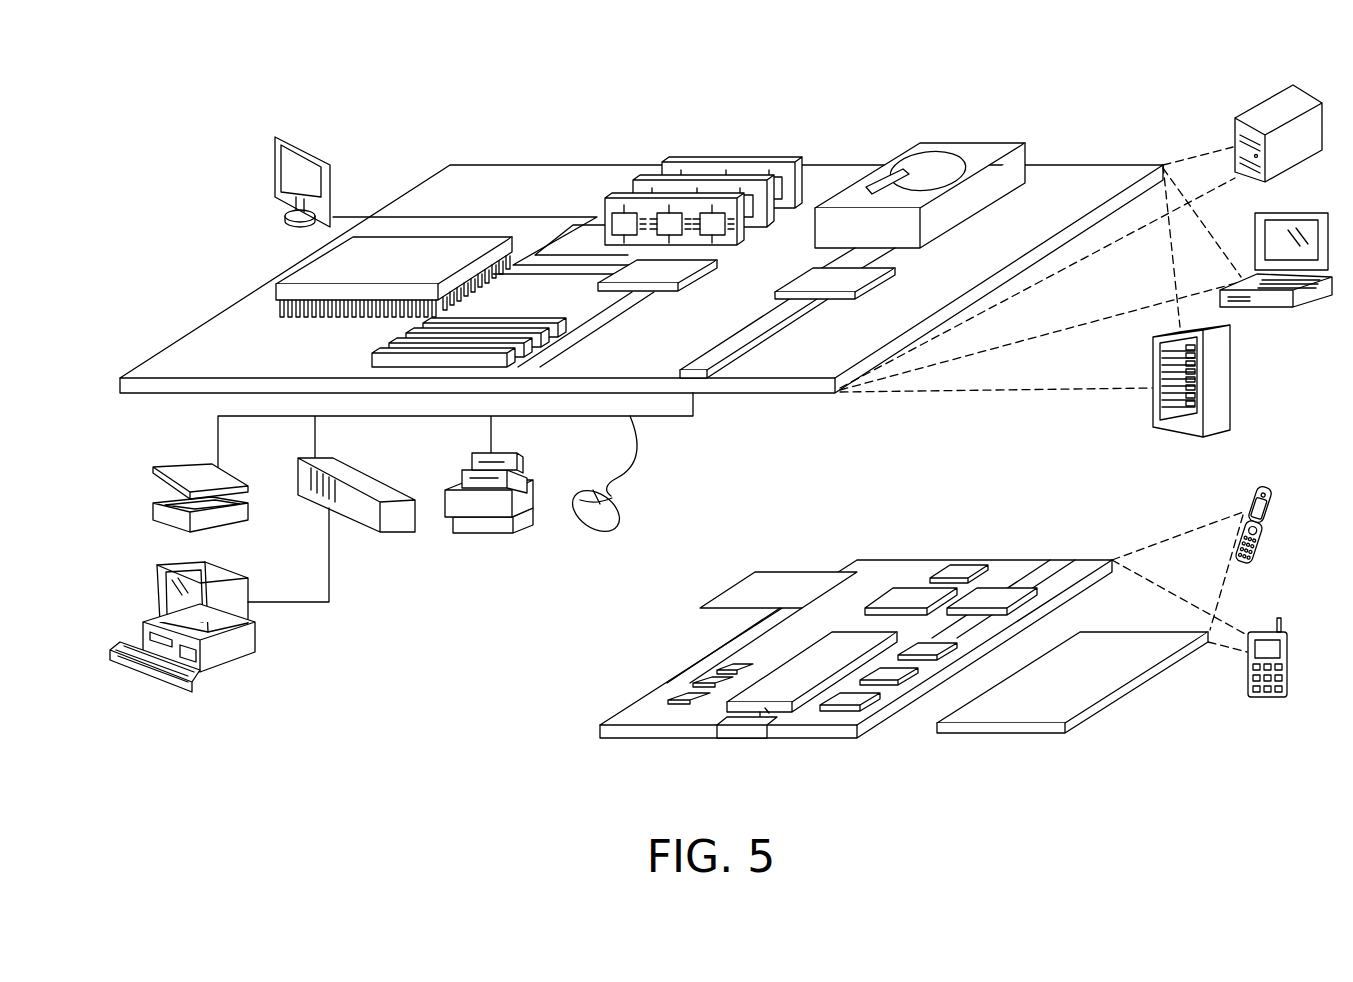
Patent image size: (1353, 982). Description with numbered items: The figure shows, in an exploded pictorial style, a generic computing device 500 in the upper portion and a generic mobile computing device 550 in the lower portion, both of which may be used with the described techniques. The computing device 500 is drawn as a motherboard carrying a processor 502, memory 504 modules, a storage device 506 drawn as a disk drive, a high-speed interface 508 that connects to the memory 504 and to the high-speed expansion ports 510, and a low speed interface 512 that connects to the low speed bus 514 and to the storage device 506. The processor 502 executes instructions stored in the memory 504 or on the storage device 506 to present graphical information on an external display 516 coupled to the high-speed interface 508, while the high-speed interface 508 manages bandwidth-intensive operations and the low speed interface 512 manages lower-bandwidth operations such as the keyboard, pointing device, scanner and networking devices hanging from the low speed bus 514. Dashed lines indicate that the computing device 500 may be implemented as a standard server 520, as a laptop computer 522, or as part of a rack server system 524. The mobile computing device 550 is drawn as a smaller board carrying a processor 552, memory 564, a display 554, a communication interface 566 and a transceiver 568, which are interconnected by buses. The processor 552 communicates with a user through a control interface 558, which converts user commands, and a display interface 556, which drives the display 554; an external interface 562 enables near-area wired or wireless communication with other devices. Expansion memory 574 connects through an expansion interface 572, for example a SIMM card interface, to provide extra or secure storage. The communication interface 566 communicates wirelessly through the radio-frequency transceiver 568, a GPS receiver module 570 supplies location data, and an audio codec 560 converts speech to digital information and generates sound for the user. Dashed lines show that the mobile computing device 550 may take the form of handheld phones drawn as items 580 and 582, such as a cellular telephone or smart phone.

The computing device 500 is at (403, 114).
The processor 502 is at (299, 265).
The memory 504 is at (736, 160).
The storage device 506 is at (958, 142).
The high-speed interface 508 is at (668, 270).
The high-speed expansion ports 510 is at (396, 339).
The low speed interface 512 is at (807, 277).
The low speed bus 514 is at (703, 366).
The display 516 is at (280, 136).
The standard server 520 is at (1255, 112).
The laptop computer 522 is at (1308, 211).
The rack server system 524 is at (1235, 380).
The mobile computing device 550 is at (557, 747).
The processor 552 is at (778, 680).
The display 554 is at (1110, 646).
The display interface 556 is at (857, 701).
The control interface 558 is at (893, 674).
The audio codec 560 is at (933, 644).
The external interface 562 is at (743, 727).
The memory 564 is at (700, 684).
The communication interface 566 is at (910, 591).
The transceiver 568 is at (1000, 592).
The GPS receiver module 570 is at (960, 568).
The expansion interface 572 is at (838, 568).
The expansion memory 574 is at (757, 570).
The mobile phone 580 is at (1253, 489).
The cellular phone 582 is at (1262, 630).